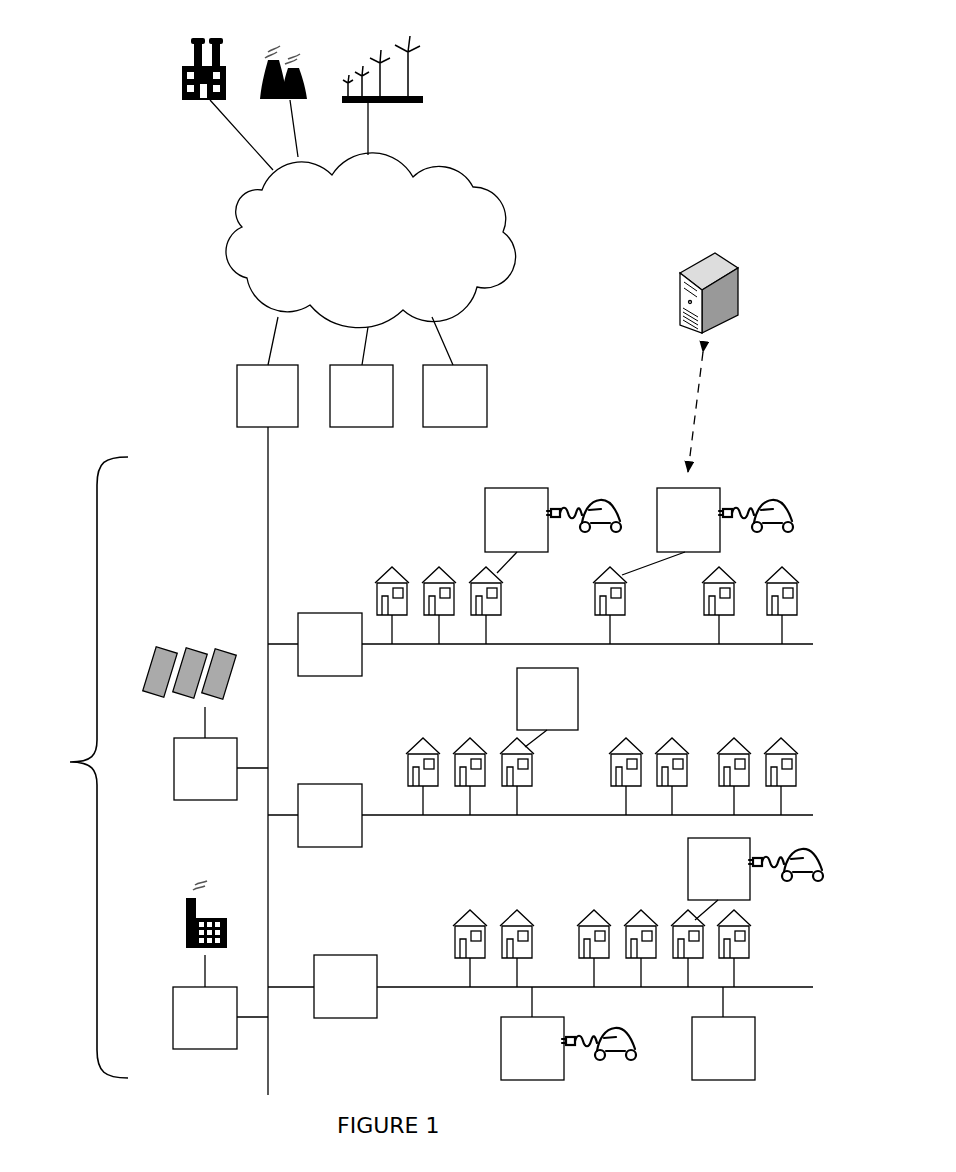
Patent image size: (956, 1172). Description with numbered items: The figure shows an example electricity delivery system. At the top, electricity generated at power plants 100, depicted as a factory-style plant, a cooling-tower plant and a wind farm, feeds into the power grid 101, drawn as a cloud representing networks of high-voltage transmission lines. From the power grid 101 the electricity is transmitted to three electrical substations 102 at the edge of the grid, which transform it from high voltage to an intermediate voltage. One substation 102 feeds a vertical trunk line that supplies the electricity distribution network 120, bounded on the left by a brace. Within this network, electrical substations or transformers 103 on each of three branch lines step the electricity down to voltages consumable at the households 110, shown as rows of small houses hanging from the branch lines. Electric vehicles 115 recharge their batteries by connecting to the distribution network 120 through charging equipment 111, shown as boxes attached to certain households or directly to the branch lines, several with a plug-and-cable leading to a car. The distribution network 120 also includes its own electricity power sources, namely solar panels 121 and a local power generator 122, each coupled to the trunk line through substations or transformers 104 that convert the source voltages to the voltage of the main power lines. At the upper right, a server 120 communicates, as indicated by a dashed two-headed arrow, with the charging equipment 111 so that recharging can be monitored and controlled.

The power plants 100 is at (152, 64).
The power grid 101 is at (371, 240).
The electrical substations 102 is at (362, 372).
The electrical substations or transformers 103 is at (540, 815).
The substations or transformers 104 is at (220, 893).
The households 110 is at (467, 564).
The charging equipment 111 is at (620, 784).
The electric vehicles 115 is at (752, 486).
The electricity distribution network 120 is at (738, 242).
The solar panels 121 is at (192, 632).
The local power generator 122 is at (187, 872).